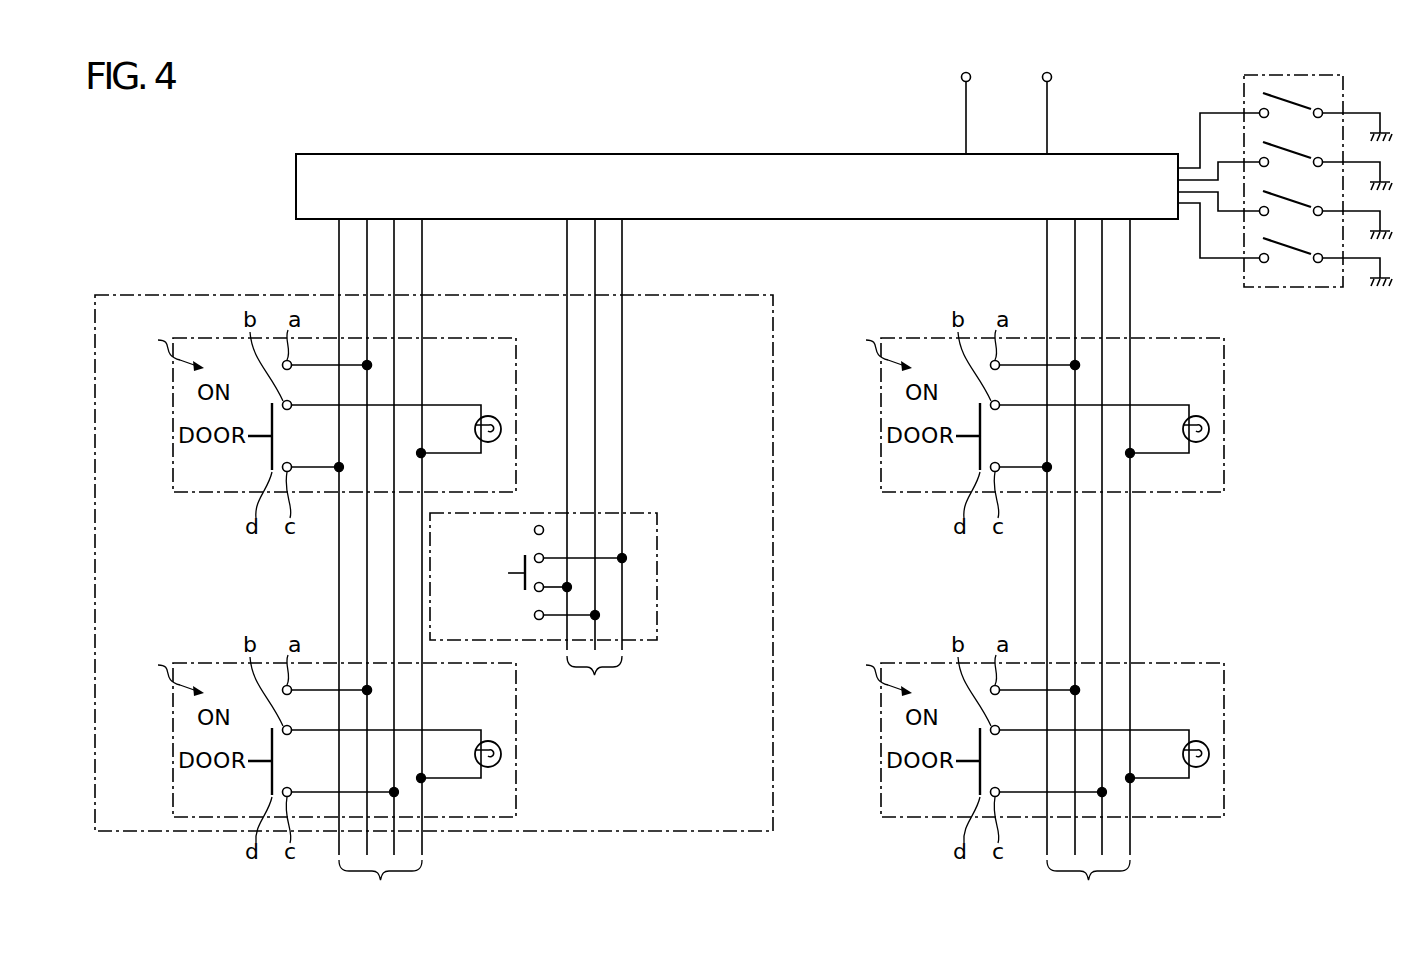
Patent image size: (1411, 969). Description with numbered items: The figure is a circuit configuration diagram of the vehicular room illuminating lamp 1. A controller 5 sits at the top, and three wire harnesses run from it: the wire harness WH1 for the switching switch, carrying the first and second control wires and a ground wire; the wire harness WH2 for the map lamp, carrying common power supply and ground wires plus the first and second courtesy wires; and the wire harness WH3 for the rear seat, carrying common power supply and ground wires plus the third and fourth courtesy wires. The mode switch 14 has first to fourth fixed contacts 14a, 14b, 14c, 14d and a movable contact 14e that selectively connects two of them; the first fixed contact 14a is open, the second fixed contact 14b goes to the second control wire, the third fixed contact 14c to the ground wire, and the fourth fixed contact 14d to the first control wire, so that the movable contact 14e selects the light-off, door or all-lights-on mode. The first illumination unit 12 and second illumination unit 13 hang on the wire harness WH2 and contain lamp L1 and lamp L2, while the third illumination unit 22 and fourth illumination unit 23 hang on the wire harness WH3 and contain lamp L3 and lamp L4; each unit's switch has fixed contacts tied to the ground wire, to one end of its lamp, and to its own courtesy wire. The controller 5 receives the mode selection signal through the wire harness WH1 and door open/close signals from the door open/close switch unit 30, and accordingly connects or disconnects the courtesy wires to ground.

The vehicular room illuminating lamp 1 is at (246, 164).
The controller 5 is at (524, 153).
The first illumination unit 12 is at (311, 425).
The second illumination unit 13 is at (311, 750).
The mode switch 14 is at (581, 597).
The first fixed contact 14a is at (544, 529).
The second fixed contact 14b is at (544, 557).
The third fixed contact 14c is at (543, 590).
The fourth fixed contact 14d is at (540, 621).
The movable contact 14e is at (524, 556).
The third illumination unit 22 is at (1019, 425).
The fourth illumination unit 23 is at (1019, 750).
The door open/close switch unit 30 is at (1300, 288).
The wire harness for the switching switch WH1 is at (594, 462).
The wire harness for the map lamp WH2 is at (380, 565).
The wire harness for the rear seat WH3 is at (1088, 565).
The lamp L1 is at (488, 415).
The lamp L2 is at (488, 740).
The lamp L3 is at (1196, 415).
The lamp L4 is at (1196, 740).